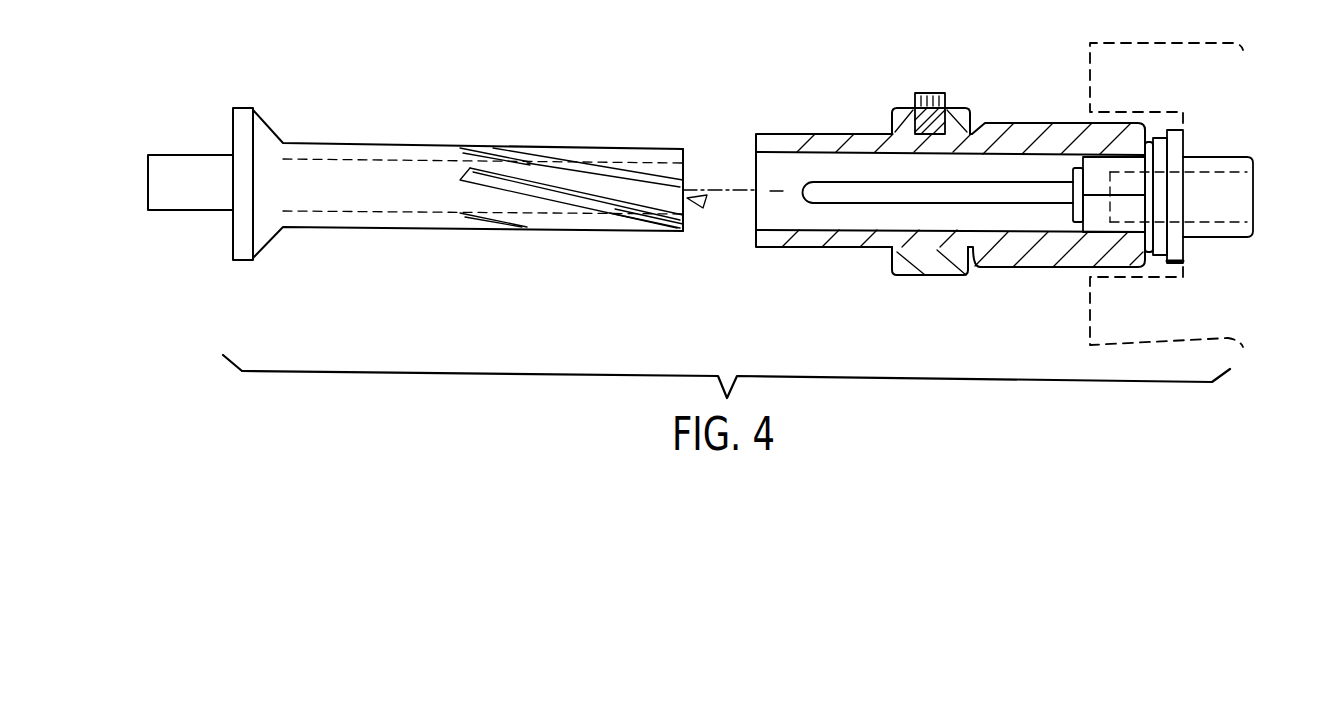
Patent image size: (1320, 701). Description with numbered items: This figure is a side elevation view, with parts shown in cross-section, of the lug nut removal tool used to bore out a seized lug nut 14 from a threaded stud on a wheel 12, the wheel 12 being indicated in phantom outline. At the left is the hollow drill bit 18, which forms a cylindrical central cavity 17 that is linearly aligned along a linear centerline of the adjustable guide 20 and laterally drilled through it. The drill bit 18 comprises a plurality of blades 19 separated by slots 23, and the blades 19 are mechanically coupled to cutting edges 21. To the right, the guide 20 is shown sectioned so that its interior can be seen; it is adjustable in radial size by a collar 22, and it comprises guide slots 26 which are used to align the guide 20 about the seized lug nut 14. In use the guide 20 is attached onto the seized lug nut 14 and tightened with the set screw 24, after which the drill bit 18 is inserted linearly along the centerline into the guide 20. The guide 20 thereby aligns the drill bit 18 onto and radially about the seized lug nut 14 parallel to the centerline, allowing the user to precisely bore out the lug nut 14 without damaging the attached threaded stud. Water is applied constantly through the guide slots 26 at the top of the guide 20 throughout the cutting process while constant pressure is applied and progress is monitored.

The wheel 12 is at (1088, 66).
The seized lug nut 14 is at (1098, 165).
The cylindrical central cavity 17 is at (705, 200).
The hollow drill bit 18 is at (340, 143).
The blades 19 is at (617, 148).
The adjustable guide 20 is at (868, 133).
The cutting edges 21 is at (387, 158).
The collar 22 is at (948, 277).
The slots 23 is at (513, 148).
The set screw 24 is at (921, 92).
The guide slots 26 is at (887, 202).